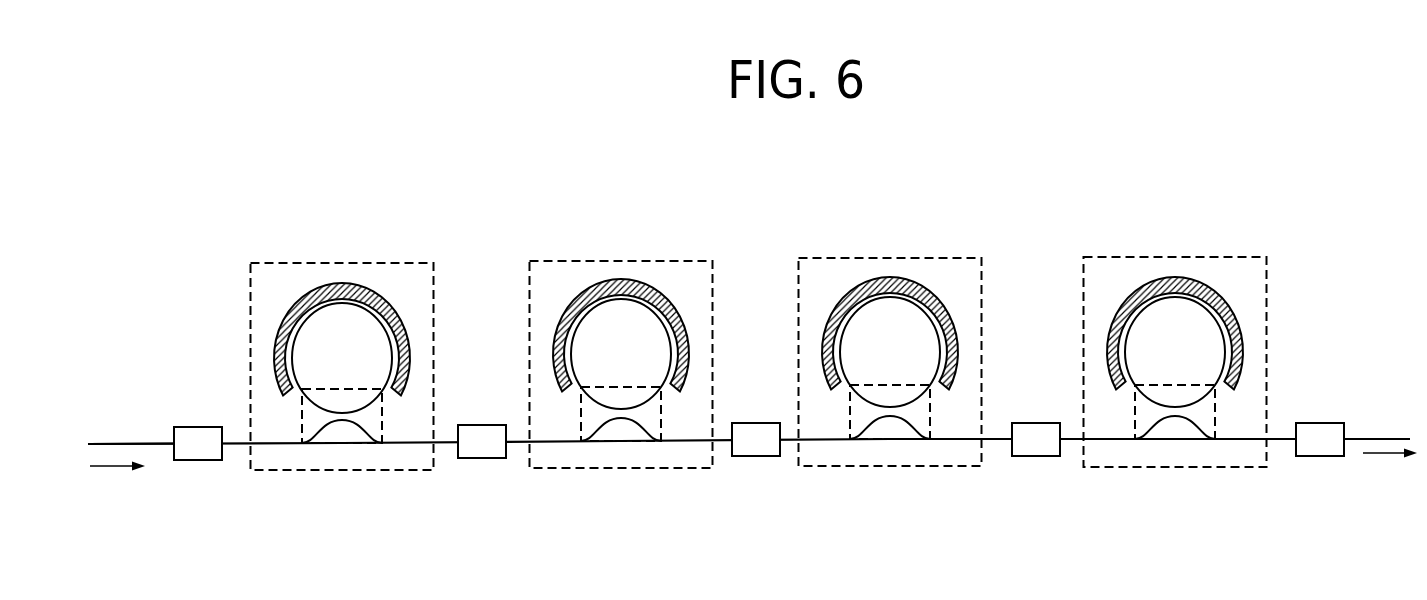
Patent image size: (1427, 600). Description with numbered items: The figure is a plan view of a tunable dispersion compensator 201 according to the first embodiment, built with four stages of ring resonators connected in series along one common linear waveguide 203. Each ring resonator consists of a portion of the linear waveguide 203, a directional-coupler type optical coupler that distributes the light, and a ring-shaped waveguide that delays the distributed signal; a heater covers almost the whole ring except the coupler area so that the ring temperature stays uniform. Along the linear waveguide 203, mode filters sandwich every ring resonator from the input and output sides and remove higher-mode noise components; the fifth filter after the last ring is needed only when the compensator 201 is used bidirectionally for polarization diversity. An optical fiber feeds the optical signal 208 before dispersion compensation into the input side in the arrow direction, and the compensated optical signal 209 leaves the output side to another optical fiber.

The tunable dispersion compensator 201 is at (1268, 210).
The linear waveguide 203 is at (115, 444).
The optical signal 208 is at (110, 468).
The optical signal 209 is at (1377, 460).